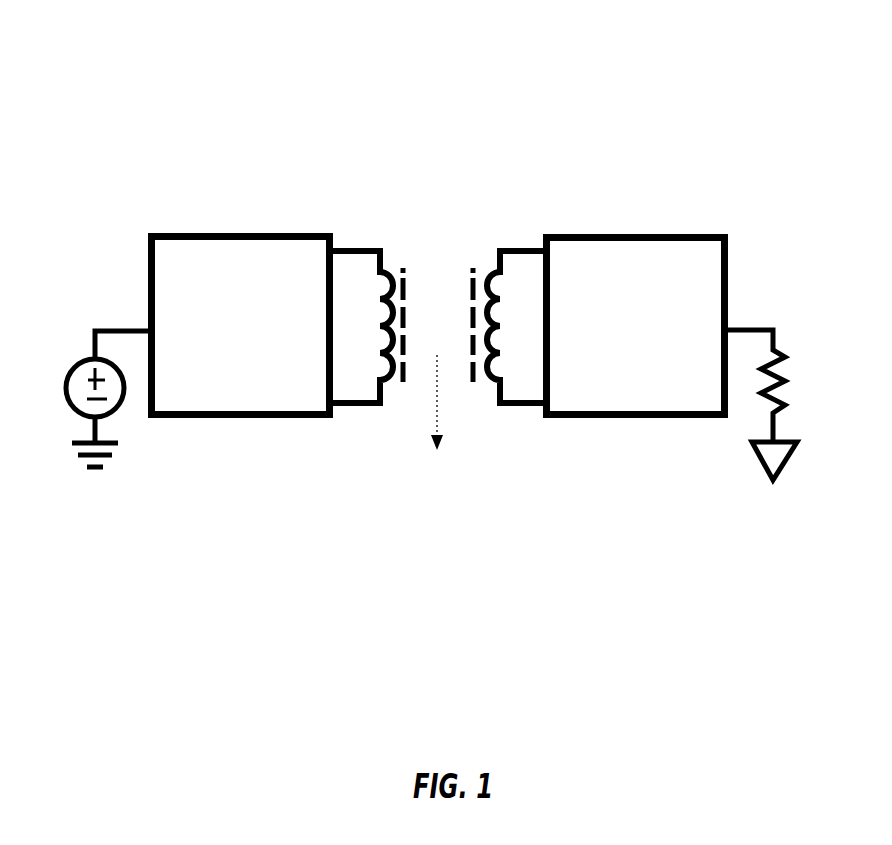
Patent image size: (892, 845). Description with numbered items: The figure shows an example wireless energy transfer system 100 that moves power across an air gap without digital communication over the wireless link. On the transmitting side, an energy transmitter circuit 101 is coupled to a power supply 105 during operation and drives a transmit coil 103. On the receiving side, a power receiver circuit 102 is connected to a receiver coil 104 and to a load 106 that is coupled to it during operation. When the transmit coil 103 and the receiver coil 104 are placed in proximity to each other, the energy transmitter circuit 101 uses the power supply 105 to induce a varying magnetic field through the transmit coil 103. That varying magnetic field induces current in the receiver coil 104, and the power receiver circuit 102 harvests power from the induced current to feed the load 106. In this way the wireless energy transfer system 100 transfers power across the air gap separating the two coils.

The wireless energy transfer system 100 is at (468, 54).
The energy transmitter circuit 101 is at (258, 233).
The power receiver circuit 102 is at (688, 235).
The transmit coil 103 is at (393, 373).
The receiver coil 104 is at (483, 375).
The power supply 105 is at (122, 408).
The load 106 is at (787, 355).